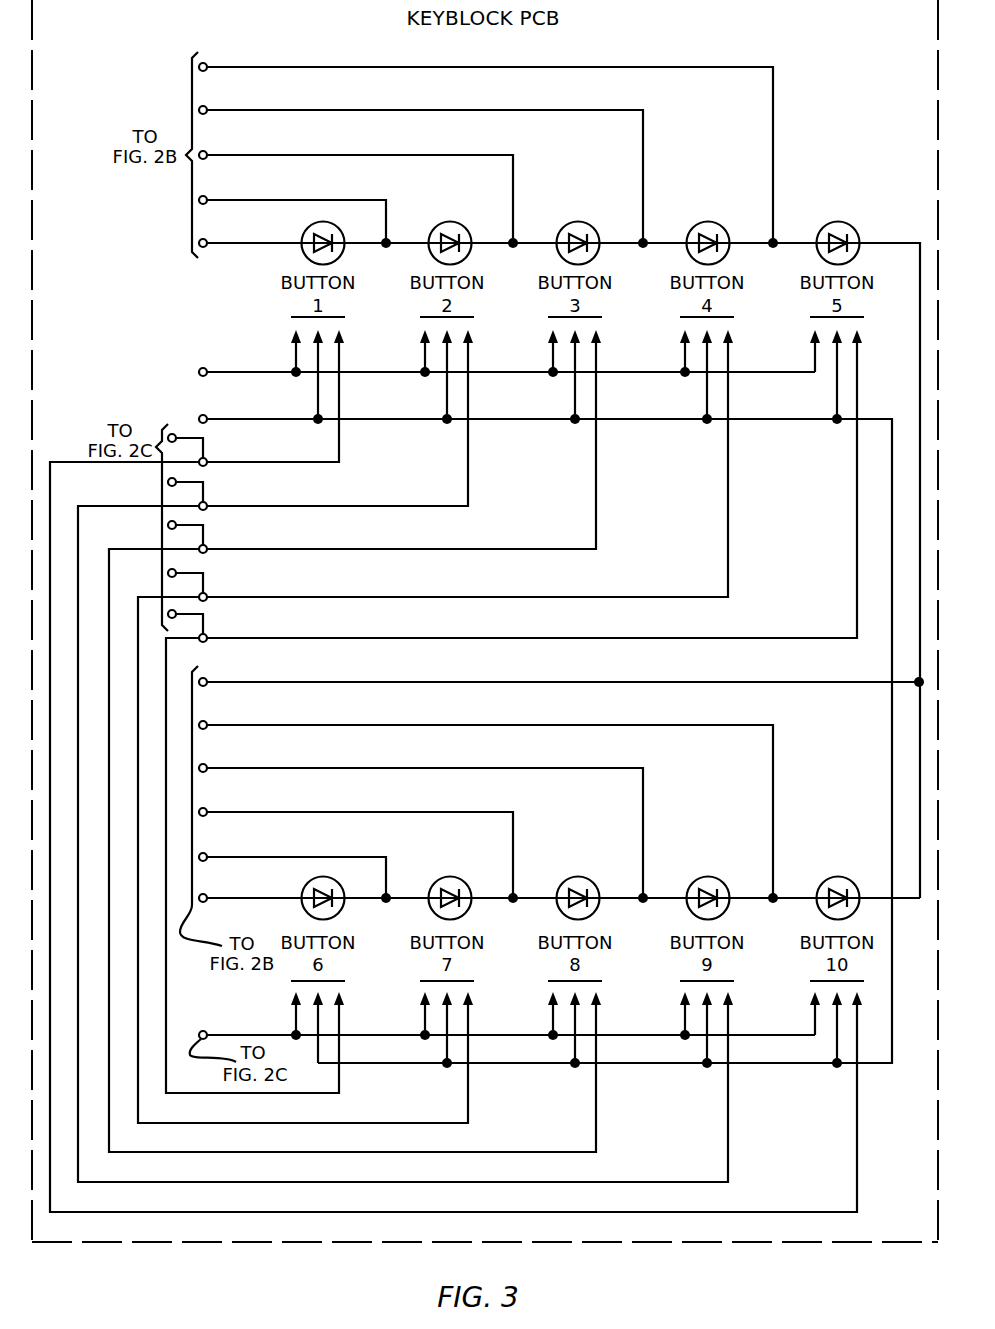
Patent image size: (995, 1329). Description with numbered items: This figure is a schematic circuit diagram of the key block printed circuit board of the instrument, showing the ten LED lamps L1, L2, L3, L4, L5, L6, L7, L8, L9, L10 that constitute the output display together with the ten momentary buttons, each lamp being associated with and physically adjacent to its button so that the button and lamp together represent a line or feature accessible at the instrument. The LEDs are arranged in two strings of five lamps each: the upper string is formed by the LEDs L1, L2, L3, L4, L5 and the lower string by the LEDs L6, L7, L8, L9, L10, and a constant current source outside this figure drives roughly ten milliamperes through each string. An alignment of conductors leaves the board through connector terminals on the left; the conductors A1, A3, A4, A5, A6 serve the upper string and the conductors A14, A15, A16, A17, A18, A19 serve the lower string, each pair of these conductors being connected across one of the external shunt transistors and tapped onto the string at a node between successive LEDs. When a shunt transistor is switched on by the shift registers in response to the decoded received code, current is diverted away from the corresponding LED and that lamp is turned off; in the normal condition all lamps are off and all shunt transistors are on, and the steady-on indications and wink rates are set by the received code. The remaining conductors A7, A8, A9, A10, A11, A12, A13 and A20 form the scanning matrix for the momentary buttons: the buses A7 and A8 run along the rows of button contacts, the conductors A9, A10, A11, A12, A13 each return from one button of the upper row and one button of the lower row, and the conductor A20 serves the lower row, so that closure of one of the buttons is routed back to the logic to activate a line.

The conductor A1 is at (488, 147).
The conductor A3 is at (423, 169).
The conductor A4 is at (358, 191).
The conductor A5 is at (295, 214).
The conductor A6 is at (559, 560).
The connector terminal A7 is at (507, 358).
The connector terminal A8 is at (545, 704).
The connector terminal A9 is at (453, 776).
The connector terminal A10 is at (403, 761).
The connector terminal A11 is at (352, 746).
The connector terminal A12 is at (433, 731).
The connector terminal A13 is at (511, 716).
The conductor A14 is at (561, 674).
The conductor A15 is at (488, 804).
The conductor A16 is at (423, 825).
The conductor A17 is at (358, 847).
The conductor A18 is at (295, 870).
The conductor A19 is at (559, 890).
The connector terminal A20 is at (507, 1021).
The LED L1 is at (335, 223).
The LED L2 is at (462, 223).
The LED L3 is at (590, 223).
The LED L4 is at (720, 223).
The LED L5 is at (850, 223).
The LED L6 is at (335, 878).
The LED L7 is at (462, 878).
The LED L8 is at (590, 878).
The LED L9 is at (720, 878).
The LED L10 is at (856, 878).